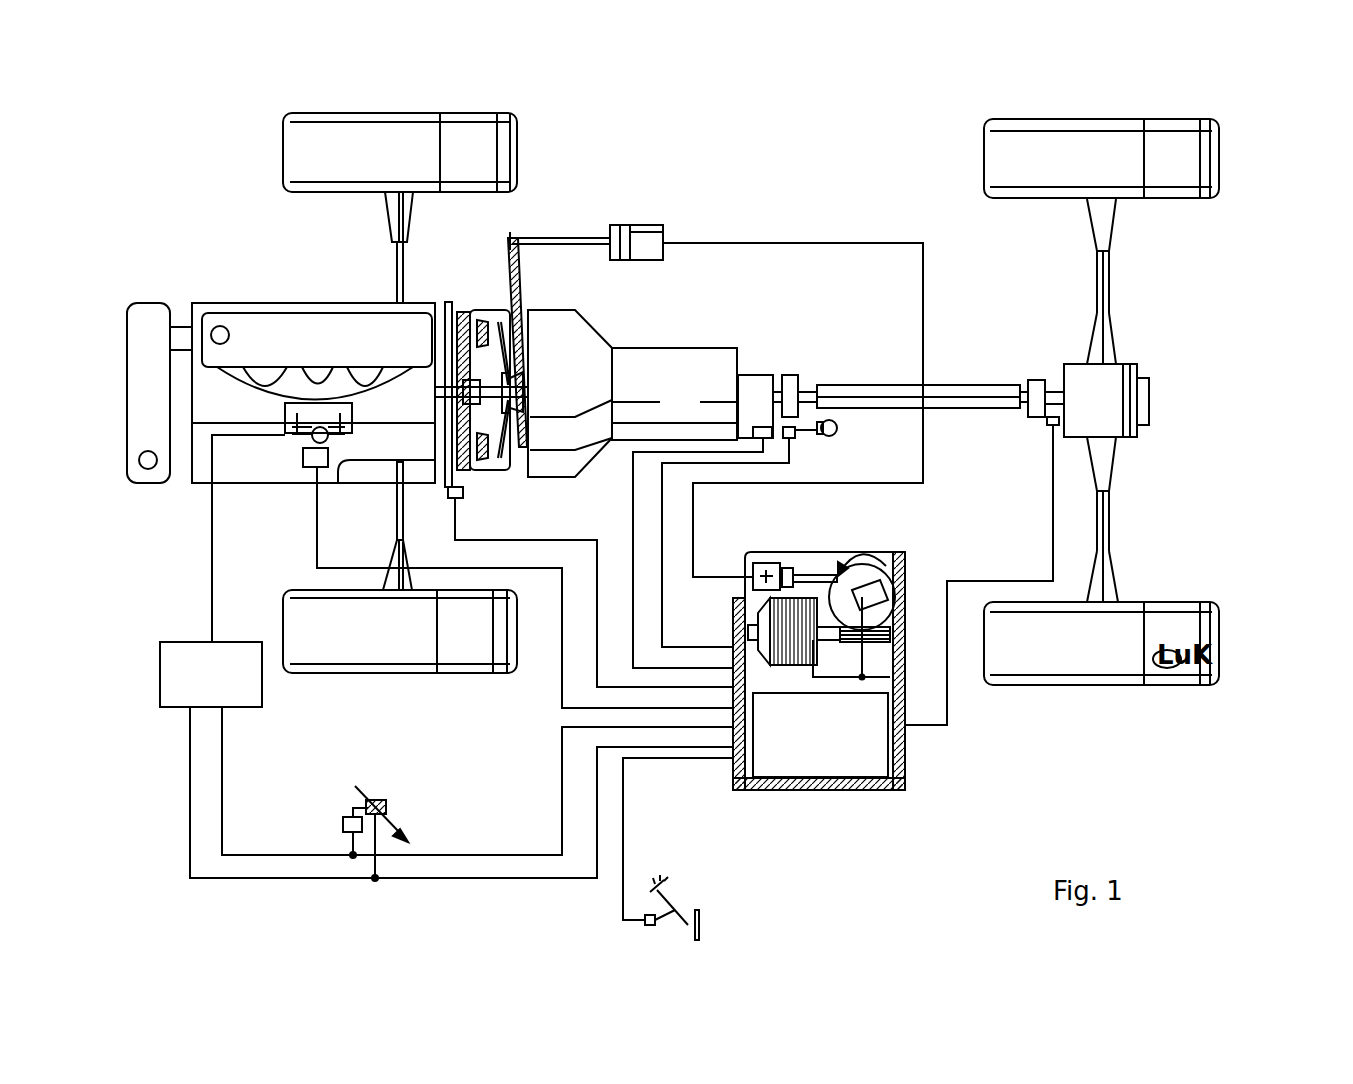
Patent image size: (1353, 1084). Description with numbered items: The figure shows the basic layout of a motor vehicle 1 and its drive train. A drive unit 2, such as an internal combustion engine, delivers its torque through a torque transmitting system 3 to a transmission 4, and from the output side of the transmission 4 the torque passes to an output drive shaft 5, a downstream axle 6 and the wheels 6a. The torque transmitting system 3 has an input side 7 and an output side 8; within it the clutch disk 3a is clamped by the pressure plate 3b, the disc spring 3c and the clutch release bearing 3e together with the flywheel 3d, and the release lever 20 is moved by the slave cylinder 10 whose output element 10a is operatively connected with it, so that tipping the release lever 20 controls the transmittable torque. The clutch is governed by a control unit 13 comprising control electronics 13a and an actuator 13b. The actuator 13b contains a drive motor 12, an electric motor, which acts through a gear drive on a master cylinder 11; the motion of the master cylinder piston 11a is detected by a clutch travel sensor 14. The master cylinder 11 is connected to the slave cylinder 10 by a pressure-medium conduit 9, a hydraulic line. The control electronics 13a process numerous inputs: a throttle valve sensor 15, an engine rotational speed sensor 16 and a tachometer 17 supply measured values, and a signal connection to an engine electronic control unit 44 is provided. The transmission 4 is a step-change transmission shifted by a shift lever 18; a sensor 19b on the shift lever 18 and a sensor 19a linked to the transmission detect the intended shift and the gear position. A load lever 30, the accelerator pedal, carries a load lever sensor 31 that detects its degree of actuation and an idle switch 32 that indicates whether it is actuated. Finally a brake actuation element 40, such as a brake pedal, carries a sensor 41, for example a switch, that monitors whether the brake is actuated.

The motor vehicle 1 is at (792, 128).
The drive unit 2 is at (250, 327).
The torque transmitting system 3 is at (525, 389).
The clutch disk 3a is at (507, 455).
The pressure plate 3b is at (495, 323).
The disc spring 3c is at (513, 353).
The flywheel 3d is at (463, 462).
The clutch release bearing 3e is at (567, 400).
The transmission 4 is at (688, 409).
The output drive shaft 5 is at (972, 395).
The axle 6 is at (1110, 528).
The wheels 6a is at (1185, 160).
The input side 7 is at (447, 305).
The output side 8 is at (530, 320).
The pressure-medium conduit 9 is at (732, 243).
The slave cylinder 10 is at (647, 228).
The output element 10a is at (565, 240).
The master cylinder 11 is at (768, 563).
The master cylinder piston 11a is at (787, 565).
The drive motor 12 is at (767, 607).
The control unit 13 is at (836, 669).
The control electronics 13a is at (842, 745).
The actuator 13b is at (882, 545).
The clutch travel sensor 14 is at (888, 590).
The throttle valve sensor 15 is at (305, 458).
The engine rotational speed sensor 16 is at (447, 498).
The tachometer 17 is at (1053, 425).
The shift lever 18 is at (800, 428).
The sensor 19a is at (763, 417).
The sensor 19b is at (795, 432).
The release lever 20 is at (520, 258).
The load lever 30 is at (357, 786).
The load lever sensor 31 is at (350, 817).
The idle switch 32 is at (386, 805).
The brake actuation element 40 is at (700, 930).
The sensor 41 is at (645, 927).
The engine electronic control unit 44 is at (229, 689).